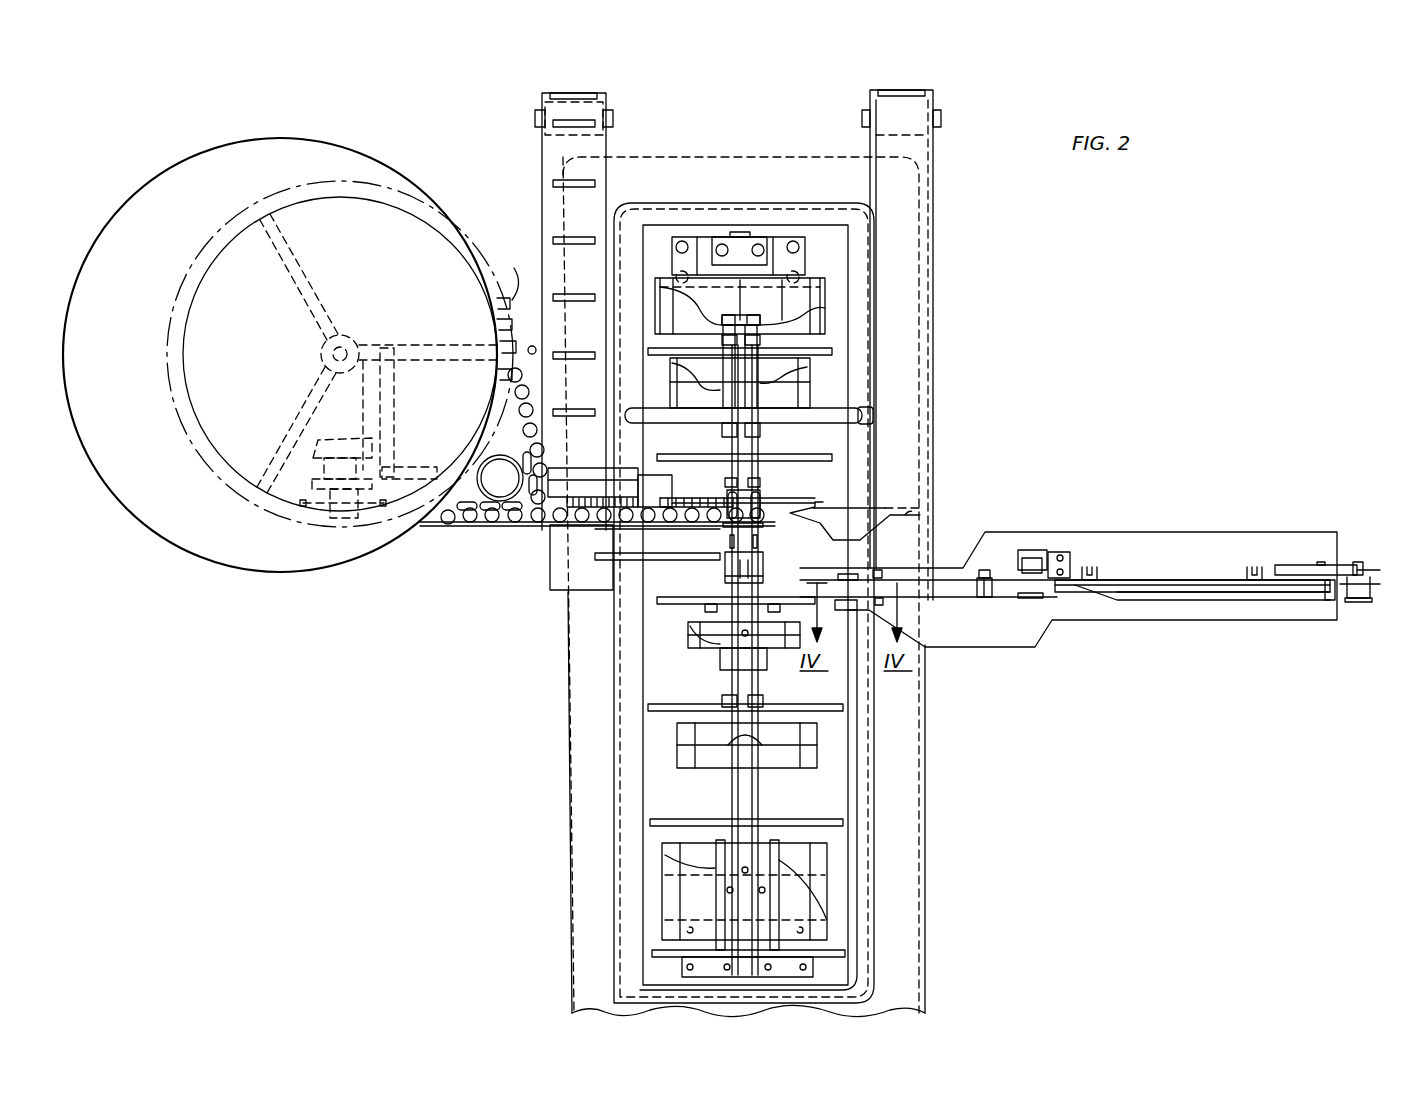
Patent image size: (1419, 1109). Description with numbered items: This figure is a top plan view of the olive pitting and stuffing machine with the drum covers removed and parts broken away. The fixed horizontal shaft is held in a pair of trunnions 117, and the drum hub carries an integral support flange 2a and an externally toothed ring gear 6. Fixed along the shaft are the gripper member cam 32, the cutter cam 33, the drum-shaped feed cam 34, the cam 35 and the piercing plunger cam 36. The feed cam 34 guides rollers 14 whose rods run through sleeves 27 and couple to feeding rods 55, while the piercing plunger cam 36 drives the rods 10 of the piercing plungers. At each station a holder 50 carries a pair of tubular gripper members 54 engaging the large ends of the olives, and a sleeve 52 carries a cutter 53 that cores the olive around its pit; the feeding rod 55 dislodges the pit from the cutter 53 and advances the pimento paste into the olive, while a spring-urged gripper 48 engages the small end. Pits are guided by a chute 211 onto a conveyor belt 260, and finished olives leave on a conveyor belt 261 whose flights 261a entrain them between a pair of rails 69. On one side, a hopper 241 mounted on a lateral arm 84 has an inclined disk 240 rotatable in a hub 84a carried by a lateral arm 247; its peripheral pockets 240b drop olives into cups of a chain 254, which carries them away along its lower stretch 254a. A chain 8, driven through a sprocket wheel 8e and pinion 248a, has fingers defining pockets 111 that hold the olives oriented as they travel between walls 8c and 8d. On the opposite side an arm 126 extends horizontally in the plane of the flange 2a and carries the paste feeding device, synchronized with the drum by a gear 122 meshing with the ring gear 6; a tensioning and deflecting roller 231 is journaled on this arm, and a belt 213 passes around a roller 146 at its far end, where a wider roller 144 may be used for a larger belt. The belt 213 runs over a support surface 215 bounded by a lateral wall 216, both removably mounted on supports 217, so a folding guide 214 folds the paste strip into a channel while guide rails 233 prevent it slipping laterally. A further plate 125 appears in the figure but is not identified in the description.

The support flange 2a is at (706, 633).
The ring gear 6 is at (838, 415).
The chain 8 is at (592, 476).
The wall 8c is at (615, 528).
The wall 8d is at (652, 507).
The sprocket wheel 8e is at (318, 492).
The rods 10 is at (762, 384).
The rollers 14 is at (738, 320).
The sleeves 27 is at (762, 800).
The gripper member cam 32 is at (722, 660).
The cutter cam 33 is at (692, 755).
The feed cam 34 is at (665, 910).
The cam 35 is at (672, 383).
The piercing plunger cam 36 is at (828, 300).
The gripper 48 is at (763, 490).
The holder 50 is at (760, 525).
The sleeve 52 is at (737, 560).
The cutter 53 is at (760, 560).
The gripper member 54 is at (768, 506).
The feeding rod 55 is at (740, 604).
The rails 69 is at (542, 216).
The lateral arm 84 is at (396, 470).
The hub 84a is at (350, 336).
The pockets 111 is at (522, 527).
The trunnions 117 is at (803, 265).
The gear 122 is at (873, 415).
The cross plate 125 is at (857, 465).
The arm 126 is at (1208, 536).
The wider roller 144 is at (1365, 575).
The roller 146 is at (1362, 602).
The chute 211 is at (914, 510).
The belt 213 is at (1233, 592).
The folding guide 214 is at (1072, 592).
The support surface 215 is at (1163, 601).
The lateral wall 216 is at (1296, 592).
The supports 217 is at (1258, 568).
The tensioning and deflecting roller 231 is at (988, 578).
The guide rails 233 is at (982, 598).
The disk 240 is at (498, 322).
The pockets 240b is at (521, 273).
The hopper 241 is at (264, 578).
The lateral arm 247 is at (384, 390).
The pinion 248a is at (337, 437).
The chain 254 is at (492, 500).
The lower stretch 254a is at (452, 521).
The conveyor belt 260 is at (905, 144).
The conveyor belt 261 is at (562, 124).
The flights 261a is at (556, 184).